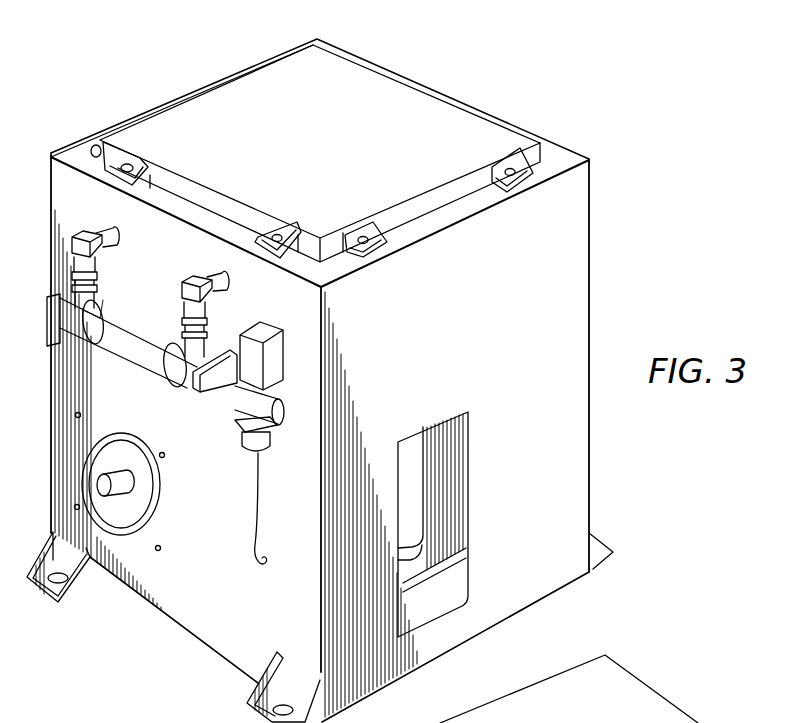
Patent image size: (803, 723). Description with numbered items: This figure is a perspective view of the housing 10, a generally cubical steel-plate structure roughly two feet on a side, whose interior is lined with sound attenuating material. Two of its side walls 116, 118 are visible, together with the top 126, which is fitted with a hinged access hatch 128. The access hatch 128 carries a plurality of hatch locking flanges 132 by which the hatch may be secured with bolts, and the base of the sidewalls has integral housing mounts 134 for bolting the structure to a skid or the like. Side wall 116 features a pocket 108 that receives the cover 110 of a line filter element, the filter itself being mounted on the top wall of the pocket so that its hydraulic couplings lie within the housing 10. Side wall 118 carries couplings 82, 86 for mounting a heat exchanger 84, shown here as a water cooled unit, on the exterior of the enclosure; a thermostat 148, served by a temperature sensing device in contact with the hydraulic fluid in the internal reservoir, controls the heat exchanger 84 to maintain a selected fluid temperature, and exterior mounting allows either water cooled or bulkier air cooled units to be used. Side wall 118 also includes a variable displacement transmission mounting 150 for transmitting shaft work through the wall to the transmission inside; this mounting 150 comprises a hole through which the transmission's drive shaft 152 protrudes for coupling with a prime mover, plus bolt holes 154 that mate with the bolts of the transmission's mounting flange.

The housing 10 is at (590, 471).
The coupling 82 is at (93, 232).
The heat exchanger 84 is at (143, 370).
The coupling 86 is at (207, 287).
The pocket 108 is at (453, 472).
The cover 110 is at (427, 536).
The side wall 116 is at (474, 308).
The side wall 118 is at (221, 491).
The top 126 is at (570, 157).
The access hatch 128 is at (320, 150).
The hatch locking flange 132 is at (290, 232).
The housing mount 134 is at (77, 590).
The thermostat 148 is at (287, 418).
The variable displacement transmission mounting 150 is at (80, 452).
The drive shaft 152 is at (130, 488).
The bolt hole 154 is at (80, 416).